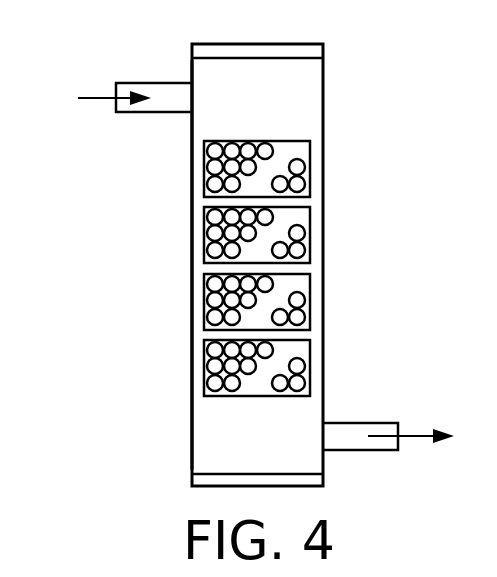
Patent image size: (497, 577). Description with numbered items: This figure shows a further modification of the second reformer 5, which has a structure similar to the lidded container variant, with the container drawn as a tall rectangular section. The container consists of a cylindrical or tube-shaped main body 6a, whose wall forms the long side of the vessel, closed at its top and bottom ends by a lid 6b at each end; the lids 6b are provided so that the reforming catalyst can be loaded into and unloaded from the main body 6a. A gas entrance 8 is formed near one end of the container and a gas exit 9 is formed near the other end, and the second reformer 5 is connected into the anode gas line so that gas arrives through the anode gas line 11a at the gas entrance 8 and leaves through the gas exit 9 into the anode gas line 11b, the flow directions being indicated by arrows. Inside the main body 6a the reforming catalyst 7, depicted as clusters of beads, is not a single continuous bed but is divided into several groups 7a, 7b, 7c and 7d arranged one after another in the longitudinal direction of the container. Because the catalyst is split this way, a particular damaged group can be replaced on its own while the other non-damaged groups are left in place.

The second reformer 5 is at (354, 117).
The main body 6a is at (190, 300).
The lid 6b is at (308, 51).
The reforming catalyst 7 is at (215, 184).
The first catalyst group 7a is at (309, 160).
The second catalyst group 7b is at (309, 228).
The third catalyst group 7c is at (309, 295).
The fourth catalyst group 7d is at (309, 362).
The gas entrance 8 is at (155, 82).
The gas exit 9 is at (367, 452).
The anode gas line 11a is at (95, 95).
The anode gas line 11b is at (422, 438).